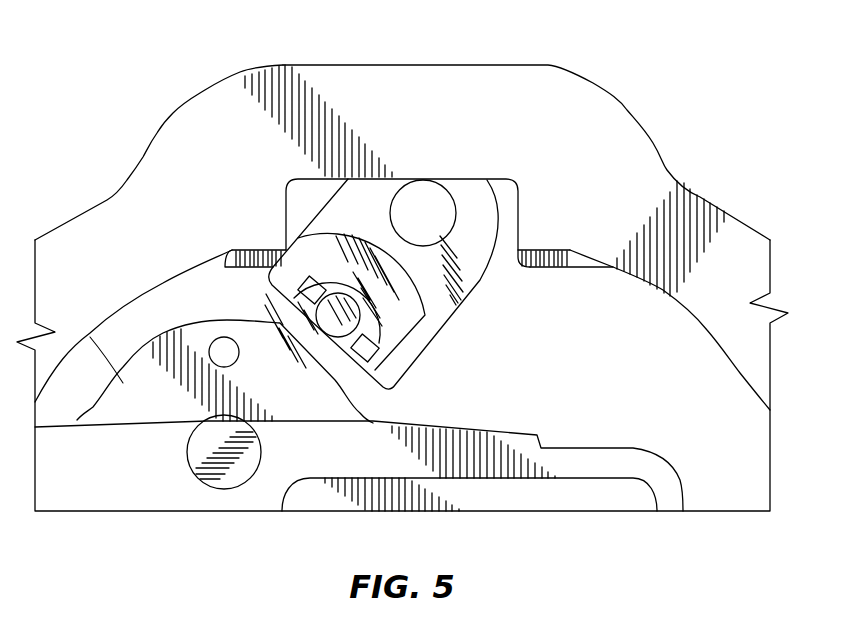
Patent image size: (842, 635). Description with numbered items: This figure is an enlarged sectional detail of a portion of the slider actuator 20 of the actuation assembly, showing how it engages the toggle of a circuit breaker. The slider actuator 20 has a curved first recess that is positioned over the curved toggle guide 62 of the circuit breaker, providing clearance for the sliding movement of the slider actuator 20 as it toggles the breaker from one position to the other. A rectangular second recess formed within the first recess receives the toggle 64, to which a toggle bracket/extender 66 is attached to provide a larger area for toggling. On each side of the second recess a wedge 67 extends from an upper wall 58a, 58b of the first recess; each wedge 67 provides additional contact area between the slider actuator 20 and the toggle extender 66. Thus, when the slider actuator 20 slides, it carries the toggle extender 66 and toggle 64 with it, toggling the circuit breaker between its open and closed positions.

The slider actuator 20 is at (373, 60).
The toggle guide 62 is at (162, 332).
The toggle 64 is at (401, 318).
The toggle bracket/extender 66 is at (482, 283).
The wedge 67 is at (240, 268).
The upper wall 58a is at (225, 371).
The upper wall 58b is at (704, 331).